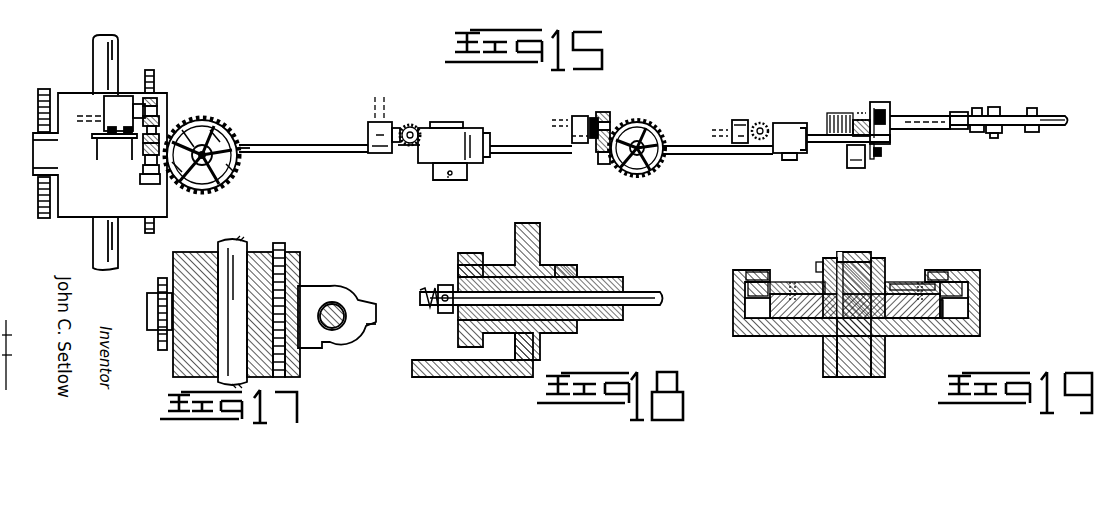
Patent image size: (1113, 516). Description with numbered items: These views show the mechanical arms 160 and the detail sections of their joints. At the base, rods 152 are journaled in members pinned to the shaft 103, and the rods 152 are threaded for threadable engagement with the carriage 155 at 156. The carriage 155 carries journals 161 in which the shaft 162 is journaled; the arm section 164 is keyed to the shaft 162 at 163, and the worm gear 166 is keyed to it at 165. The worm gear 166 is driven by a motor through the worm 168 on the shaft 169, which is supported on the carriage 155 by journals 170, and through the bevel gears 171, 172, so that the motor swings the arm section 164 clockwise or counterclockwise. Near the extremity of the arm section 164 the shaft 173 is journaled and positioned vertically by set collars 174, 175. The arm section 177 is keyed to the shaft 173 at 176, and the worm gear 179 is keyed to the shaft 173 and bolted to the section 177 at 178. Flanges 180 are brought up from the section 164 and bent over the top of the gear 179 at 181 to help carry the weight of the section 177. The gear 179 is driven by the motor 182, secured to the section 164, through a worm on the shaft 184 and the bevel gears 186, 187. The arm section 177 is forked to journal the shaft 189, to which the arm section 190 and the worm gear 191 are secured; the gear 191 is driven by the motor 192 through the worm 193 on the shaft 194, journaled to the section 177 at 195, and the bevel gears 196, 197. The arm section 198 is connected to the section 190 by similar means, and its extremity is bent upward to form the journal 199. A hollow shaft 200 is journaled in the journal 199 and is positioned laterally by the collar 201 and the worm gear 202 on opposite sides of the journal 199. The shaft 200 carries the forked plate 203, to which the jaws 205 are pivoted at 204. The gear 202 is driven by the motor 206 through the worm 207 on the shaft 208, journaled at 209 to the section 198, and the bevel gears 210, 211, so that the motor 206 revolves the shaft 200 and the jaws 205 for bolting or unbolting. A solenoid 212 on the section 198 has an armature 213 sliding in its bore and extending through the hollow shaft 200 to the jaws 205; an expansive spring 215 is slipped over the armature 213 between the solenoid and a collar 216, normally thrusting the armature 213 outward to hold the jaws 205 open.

In FIG. 15, the shaft 103 is at (105, 45).
In FIG. 17, the shaft 103 is at (253, 242).
In FIG. 15, the rods 152 is at (46, 92).
In FIG. 17, the rods 152 is at (285, 250).
In FIG. 15, the carriage 155 is at (72, 205).
In FIG. 17, the threaded engagement 156 is at (300, 288).
In FIG. 15, the mechanical arms 160 is at (527, 155).
In FIG. 17, the journals 161 is at (310, 290).
In FIG. 15, the shaft 162 is at (230, 148).
In FIG. 17, the shaft 162 is at (350, 310).
In FIG. 17, the key 163 is at (342, 306).
In FIG. 15, the arm section 164 is at (305, 158).
In FIG. 17, the arm section 164 is at (378, 340).
In FIG. 19, the arm section 164 is at (826, 350).
In FIG. 15, the key 165 is at (205, 142).
In FIG. 15, the worm gear 166 is at (203, 114).
In FIG. 15, the worm 168 is at (147, 150).
In FIG. 15, the shaft 169 is at (150, 180).
In FIG. 15, the journals 170 is at (150, 120).
In FIG. 15, the bevel gear 171 is at (152, 102).
In FIG. 15, the bevel gear 172 is at (148, 98).
In FIG. 19, the shaft 173 is at (853, 378).
In FIG. 15, the set collar 174 is at (466, 178).
In FIG. 19, the set collar 174 is at (900, 372).
In FIG. 19, the set collar 175 is at (878, 262).
In FIG. 19, the key 176 is at (848, 262).
In FIG. 19, the arm section 177 is at (922, 337).
In FIG. 19, the bolts 178 is at (795, 280).
In FIG. 19, the worm gear 179 is at (905, 282).
In FIG. 19, the flanges 180 is at (733, 305).
In FIG. 19, the bent-over portion 181 is at (740, 268).
In FIG. 15, the motor 182 is at (368, 130).
In FIG. 15, the shaft 184 is at (410, 125).
In FIG. 15, the bevel gear 186 is at (412, 148).
In FIG. 15, the bevel gear 187 is at (398, 128).
In FIG. 15, the shaft 189 is at (645, 160).
In FIG. 15, the arm section 190 is at (718, 155).
In FIG. 15, the worm gear 191 is at (662, 132).
In FIG. 15, the motor 192 is at (572, 118).
In FIG. 15, the worm 193 is at (598, 148).
In FIG. 15, the shaft 194 is at (612, 126).
In FIG. 15, the journal 195 is at (605, 166).
In FIG. 15, the bevel gear 196 is at (606, 112).
In FIG. 15, the bevel gear 197 is at (598, 118).
In FIG. 15, the arm section 198 is at (818, 150).
In FIG. 18, the arm section 198 is at (452, 374).
In FIG. 18, the journal 199 is at (540, 252).
In FIG. 15, the hollow shaft 200 is at (922, 128).
In FIG. 18, the hollow shaft 200 is at (600, 280).
In FIG. 18, the collar 201 is at (572, 270).
In FIG. 18, the worm gear 202 is at (460, 260).
In FIG. 15, the forked plate 203 is at (968, 130).
In FIG. 15, the pivots 204 is at (995, 108).
In FIG. 15, the jaws 205 is at (1060, 118).
In FIG. 15, the motor 206 is at (855, 168).
In FIG. 15, the worm 207 is at (860, 120).
In FIG. 15, the shaft 208 is at (890, 108).
In FIG. 15, the journal 209 is at (880, 100).
In FIG. 15, the bevel gear 210 is at (878, 153).
In FIG. 15, the bevel gear 211 is at (874, 158).
In FIG. 15, the solenoid 212 is at (830, 116).
In FIG. 18, the armature 213 is at (650, 295).
In FIG. 18, the expansive spring 215 is at (425, 288).
In FIG. 18, the collar 216 is at (442, 315).